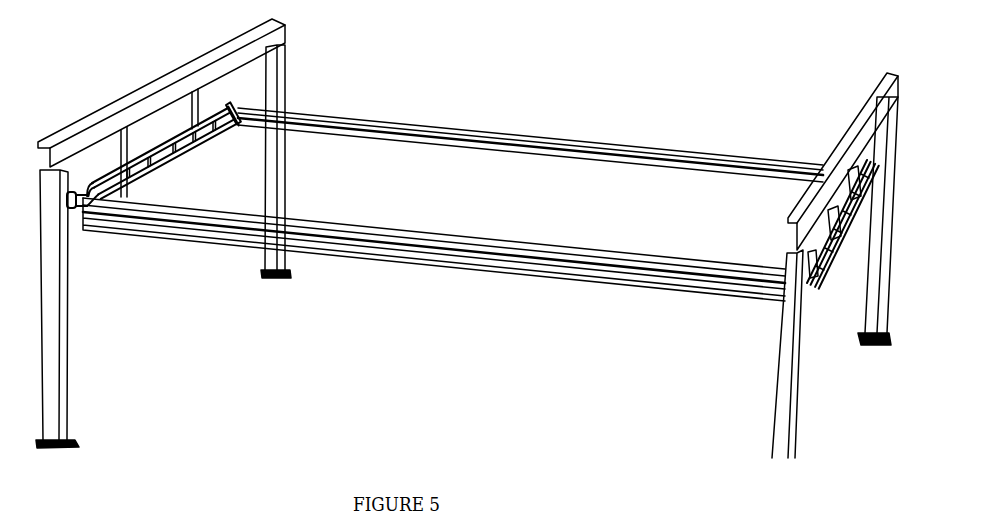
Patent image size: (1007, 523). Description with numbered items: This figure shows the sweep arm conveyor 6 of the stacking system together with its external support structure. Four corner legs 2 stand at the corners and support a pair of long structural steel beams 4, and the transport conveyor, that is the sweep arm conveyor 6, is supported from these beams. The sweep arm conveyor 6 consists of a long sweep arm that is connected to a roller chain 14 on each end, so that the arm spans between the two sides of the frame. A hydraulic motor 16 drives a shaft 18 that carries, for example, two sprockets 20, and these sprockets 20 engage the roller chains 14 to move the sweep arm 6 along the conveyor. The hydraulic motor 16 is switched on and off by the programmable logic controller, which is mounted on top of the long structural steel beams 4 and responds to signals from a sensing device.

The corner leg 2 is at (287, 78).
The long structural steel beam 4 is at (173, 72).
The sweep arm conveyor 6 is at (388, 118).
The roller chain 14 is at (212, 137).
The hydraulic motor 16 is at (73, 208).
The shaft 18 is at (149, 208).
The sprocket 20 is at (238, 128).